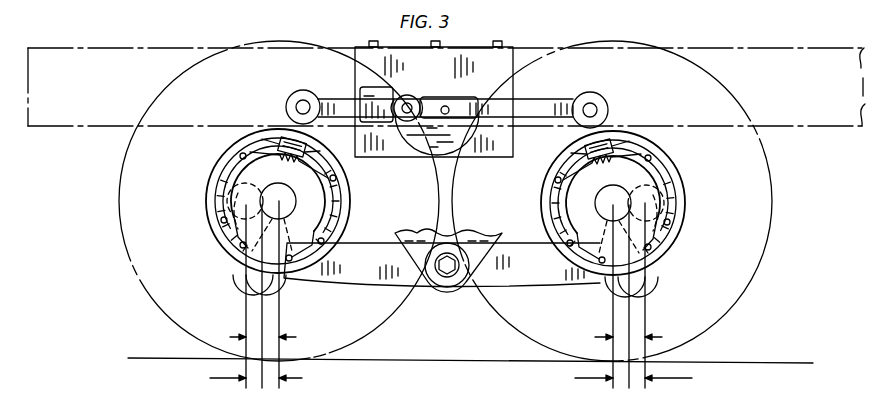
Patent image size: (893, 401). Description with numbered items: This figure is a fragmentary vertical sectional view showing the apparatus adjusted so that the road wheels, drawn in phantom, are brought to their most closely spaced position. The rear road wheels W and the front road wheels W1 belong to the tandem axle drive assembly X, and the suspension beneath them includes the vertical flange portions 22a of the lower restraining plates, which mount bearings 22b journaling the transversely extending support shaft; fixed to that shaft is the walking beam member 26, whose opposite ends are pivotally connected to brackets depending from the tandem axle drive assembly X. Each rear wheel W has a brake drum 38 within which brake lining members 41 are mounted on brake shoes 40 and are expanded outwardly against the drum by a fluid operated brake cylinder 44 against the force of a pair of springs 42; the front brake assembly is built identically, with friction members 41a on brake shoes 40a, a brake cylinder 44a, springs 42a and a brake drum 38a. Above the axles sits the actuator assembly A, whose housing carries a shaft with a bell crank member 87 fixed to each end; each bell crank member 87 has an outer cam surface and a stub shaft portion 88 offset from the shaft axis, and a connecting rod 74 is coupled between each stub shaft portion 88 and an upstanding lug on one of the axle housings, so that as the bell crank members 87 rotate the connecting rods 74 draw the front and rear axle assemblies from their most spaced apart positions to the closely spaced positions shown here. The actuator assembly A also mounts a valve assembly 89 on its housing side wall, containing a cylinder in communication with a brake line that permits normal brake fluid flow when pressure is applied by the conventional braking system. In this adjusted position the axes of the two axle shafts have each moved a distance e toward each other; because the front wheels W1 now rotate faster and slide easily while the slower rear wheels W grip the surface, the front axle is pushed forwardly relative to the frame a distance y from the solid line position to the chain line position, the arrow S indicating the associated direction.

The vertical flange portion 22a is at (456, 292).
The bearing 22b is at (426, 263).
The walking beam member 26 is at (442, 265).
The brake drum 38 is at (350, 200).
The brake drum 38a is at (686, 184).
The brake shoe 40 is at (328, 222).
The brake shoe 40a is at (677, 237).
The brake lining member 41 is at (207, 205).
The friction member 41a is at (549, 199).
The spring 42 is at (294, 170).
The spring 42a is at (630, 168).
The fluid operated brake cylinder 44 is at (291, 137).
The fluid operated brake cylinder 44a is at (607, 157).
The connecting rod 74 is at (339, 98).
The bell crank member 87 is at (450, 140).
The stub shaft portion 88 is at (413, 100).
The valve assembly 89 is at (375, 97).
The actuator assembly A is at (514, 45).
The rear road wheel W is at (119, 200).
The front road wheel W1 is at (751, 298).
The tandem axle drive assembly X is at (218, 268).
The spring force direction S is at (443, 316).
The distance e is at (446, 294).
The distance y is at (451, 379).